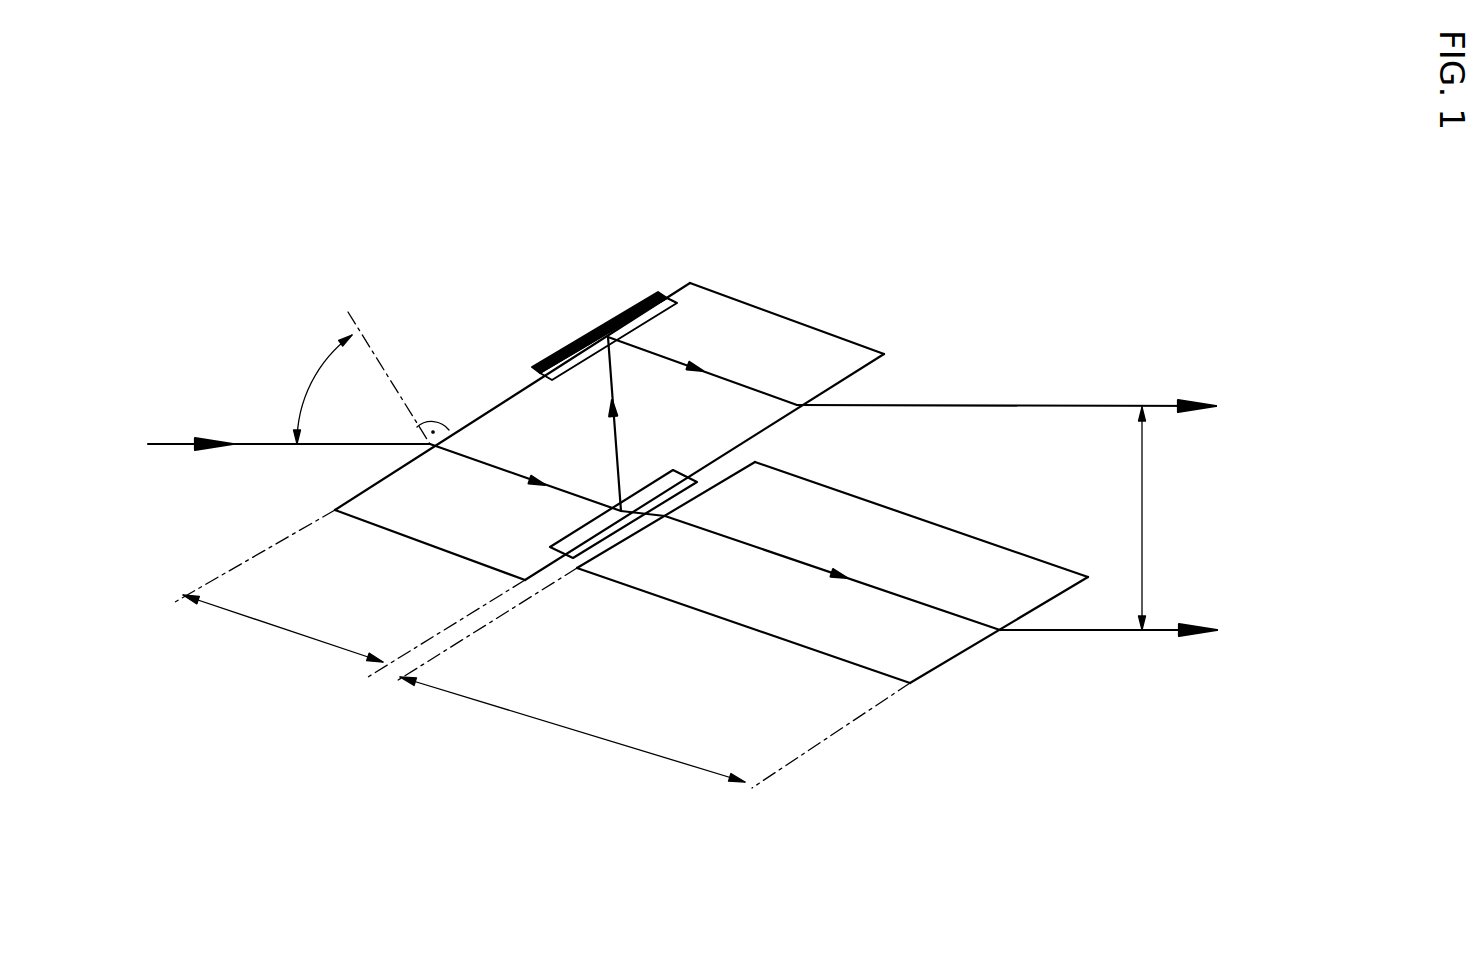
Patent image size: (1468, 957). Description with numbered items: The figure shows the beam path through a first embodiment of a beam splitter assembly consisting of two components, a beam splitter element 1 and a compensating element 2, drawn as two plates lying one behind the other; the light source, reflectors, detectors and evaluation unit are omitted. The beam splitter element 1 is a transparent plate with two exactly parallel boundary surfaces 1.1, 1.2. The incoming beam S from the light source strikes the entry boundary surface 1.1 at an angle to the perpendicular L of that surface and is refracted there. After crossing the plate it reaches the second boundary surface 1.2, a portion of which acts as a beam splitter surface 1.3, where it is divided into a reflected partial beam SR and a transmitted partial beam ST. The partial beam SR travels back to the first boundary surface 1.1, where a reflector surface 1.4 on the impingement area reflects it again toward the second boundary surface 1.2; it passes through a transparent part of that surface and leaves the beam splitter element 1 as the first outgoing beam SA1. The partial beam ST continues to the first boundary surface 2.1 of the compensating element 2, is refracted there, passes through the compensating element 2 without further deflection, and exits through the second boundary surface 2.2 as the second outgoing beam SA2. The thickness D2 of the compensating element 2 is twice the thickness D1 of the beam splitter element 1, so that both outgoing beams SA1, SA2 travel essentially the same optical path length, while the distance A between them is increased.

The beam splitter element 1 is at (630, 454).
The first boundary surface 1.1 is at (367, 481).
The second boundary surface 1.2 is at (870, 368).
The beam splitter surface 1.3 is at (607, 522).
The reflector surface 1.4 is at (630, 300).
The compensating element 2 is at (834, 575).
The first boundary surface of compensating element 2.1 is at (735, 478).
The second boundary surface of compensating element 2.2 is at (980, 643).
The incoming beam S is at (184, 442).
The reflected partial beam SR is at (618, 410).
The transmitted partial beam ST is at (653, 515).
The first outgoing beam SA1 is at (1160, 403).
The second outgoing beam SA2 is at (1167, 620).
The distance between outgoing beams A is at (1155, 518).
The perpendicular of entry surface L is at (370, 346).
The thickness of beam splitter element D1 is at (257, 620).
The thickness of compensating element D2 is at (520, 710).